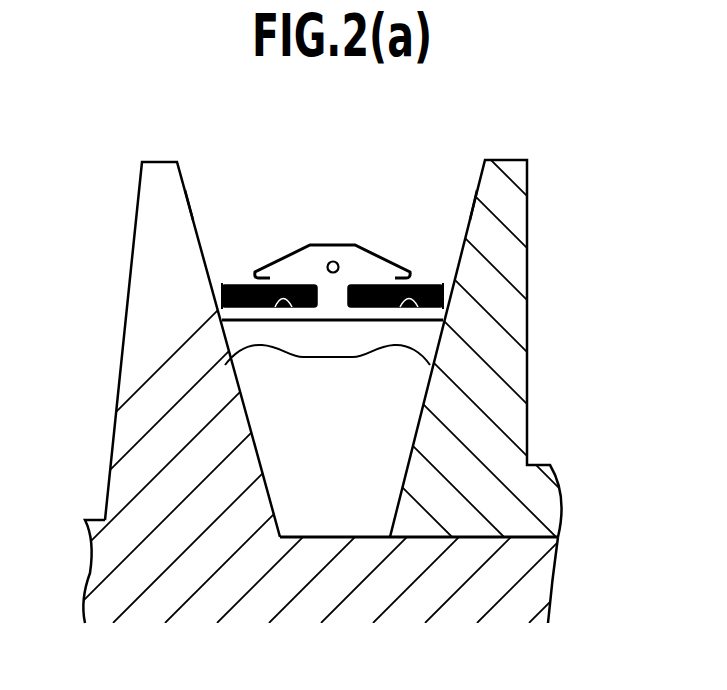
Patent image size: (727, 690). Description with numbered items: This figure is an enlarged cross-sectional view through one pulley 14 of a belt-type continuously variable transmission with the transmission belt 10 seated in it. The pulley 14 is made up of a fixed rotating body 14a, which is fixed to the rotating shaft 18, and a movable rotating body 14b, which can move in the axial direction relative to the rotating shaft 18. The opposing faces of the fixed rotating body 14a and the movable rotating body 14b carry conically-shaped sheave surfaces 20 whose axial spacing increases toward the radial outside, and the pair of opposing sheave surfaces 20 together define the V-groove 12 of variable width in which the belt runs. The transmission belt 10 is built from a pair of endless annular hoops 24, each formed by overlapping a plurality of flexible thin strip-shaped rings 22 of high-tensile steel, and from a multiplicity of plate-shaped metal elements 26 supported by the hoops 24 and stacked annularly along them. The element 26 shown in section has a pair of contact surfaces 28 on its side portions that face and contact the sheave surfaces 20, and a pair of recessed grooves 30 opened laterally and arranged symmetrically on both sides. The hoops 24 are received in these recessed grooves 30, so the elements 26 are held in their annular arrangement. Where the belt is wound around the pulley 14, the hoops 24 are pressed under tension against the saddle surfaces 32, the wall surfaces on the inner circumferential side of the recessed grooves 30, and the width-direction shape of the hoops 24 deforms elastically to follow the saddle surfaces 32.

The transmission belt 10 is at (298, 172).
The V-groove 12 is at (348, 500).
The pulley 14 is at (128, 124).
The fixed rotating body 14a is at (150, 286).
The movable rotating body 14b is at (510, 262).
The rotating shaft 18 is at (523, 583).
The sheave surface 20 is at (192, 210).
The ring 22 is at (269, 292).
The hoop 24 is at (292, 270).
The element 26 is at (332, 243).
The contact surface 28 is at (230, 345).
The recessed groove 30 is at (238, 276).
The saddle surface 32 is at (292, 300).